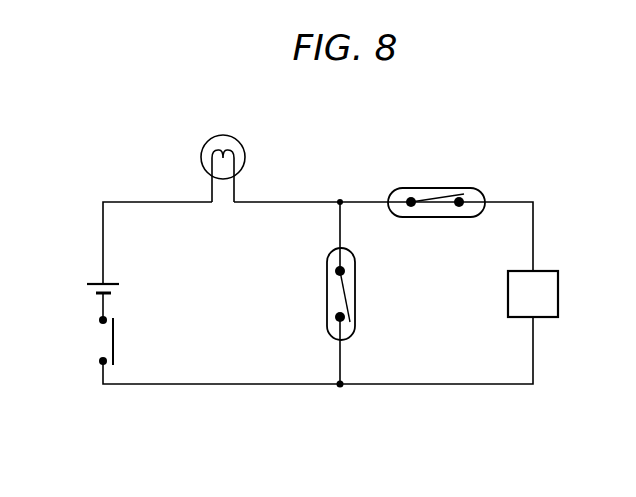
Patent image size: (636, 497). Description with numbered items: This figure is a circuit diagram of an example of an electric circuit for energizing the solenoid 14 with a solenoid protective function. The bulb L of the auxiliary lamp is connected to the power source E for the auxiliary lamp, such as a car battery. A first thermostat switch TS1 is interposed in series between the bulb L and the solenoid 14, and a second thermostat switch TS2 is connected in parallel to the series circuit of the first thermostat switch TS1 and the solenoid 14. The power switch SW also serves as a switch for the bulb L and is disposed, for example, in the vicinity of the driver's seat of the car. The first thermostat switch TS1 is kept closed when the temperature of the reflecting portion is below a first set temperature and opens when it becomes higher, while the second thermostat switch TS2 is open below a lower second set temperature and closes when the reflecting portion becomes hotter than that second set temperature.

The bulb L is at (232, 168).
The power source E is at (113, 297).
The power switch SW is at (126, 340).
The first thermostat switch TS1 is at (436, 190).
The second thermostat switch TS2 is at (363, 294).
The solenoid 14 is at (558, 293).